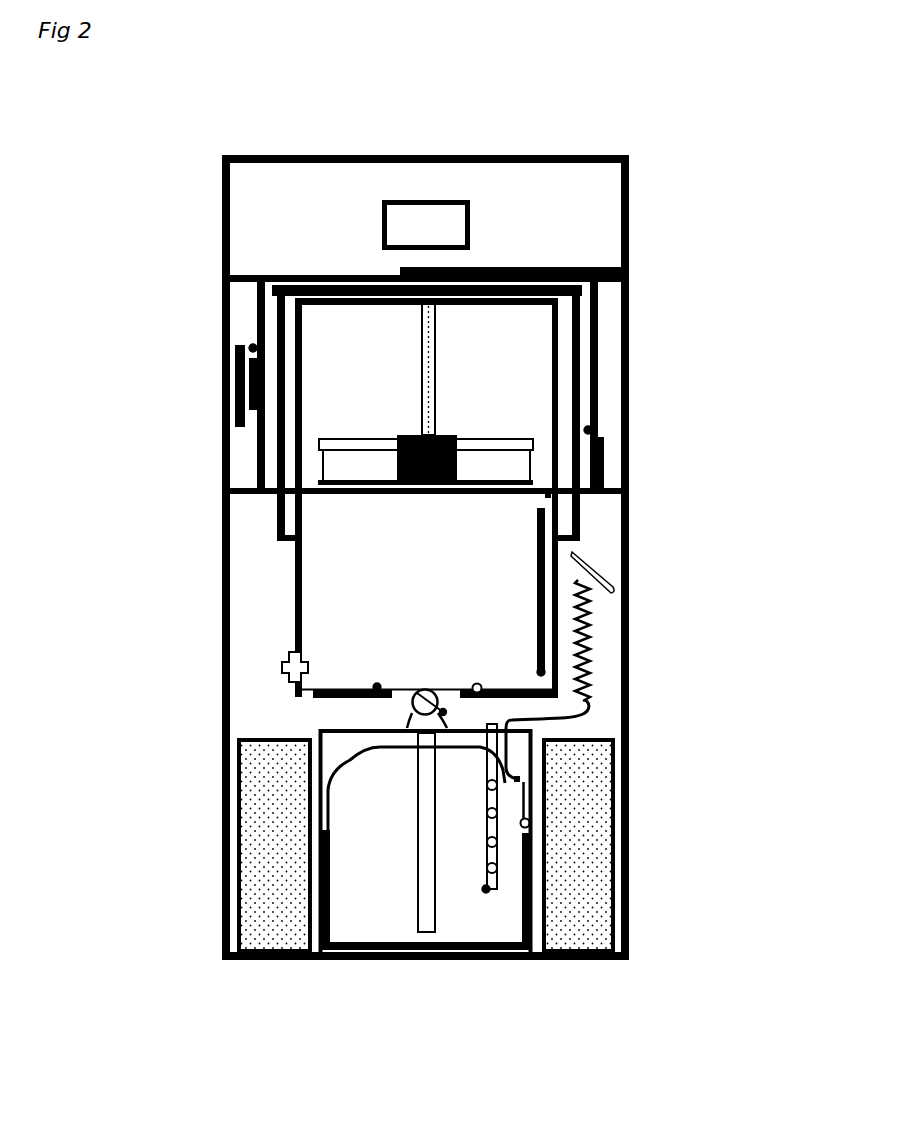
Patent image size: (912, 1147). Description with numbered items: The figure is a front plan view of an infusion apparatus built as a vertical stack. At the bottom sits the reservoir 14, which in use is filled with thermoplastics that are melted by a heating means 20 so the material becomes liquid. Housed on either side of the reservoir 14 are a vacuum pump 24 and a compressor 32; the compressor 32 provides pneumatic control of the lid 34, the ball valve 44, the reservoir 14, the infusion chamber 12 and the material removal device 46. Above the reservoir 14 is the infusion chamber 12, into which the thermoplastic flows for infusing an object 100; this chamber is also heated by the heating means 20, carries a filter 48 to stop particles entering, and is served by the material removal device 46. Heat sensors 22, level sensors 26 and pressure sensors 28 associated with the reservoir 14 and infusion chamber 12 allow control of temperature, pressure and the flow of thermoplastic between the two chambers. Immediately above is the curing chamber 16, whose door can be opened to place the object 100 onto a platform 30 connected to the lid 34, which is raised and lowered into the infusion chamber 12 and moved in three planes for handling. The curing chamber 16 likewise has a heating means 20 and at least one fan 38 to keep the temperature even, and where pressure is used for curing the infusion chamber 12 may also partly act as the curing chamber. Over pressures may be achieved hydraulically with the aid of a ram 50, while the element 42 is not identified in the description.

The infusion chamber 12 is at (296, 642).
The reservoir 14 is at (323, 937).
The curing chamber 16 is at (630, 468).
The heating means 20 is at (236, 397).
The heat sensors 22 is at (252, 347).
The vacuum pump 24 is at (628, 888).
The level sensors 26 is at (545, 527).
The pressure sensors 28 is at (550, 495).
The platform 30 is at (437, 343).
The compressor 32 is at (240, 817).
The lid 34 is at (296, 292).
The fan 38 is at (629, 269).
The control box 42 is at (462, 230).
The ball valve 44 is at (414, 703).
The material removal device 46 is at (613, 585).
The filter 48 is at (444, 690).
The ram 50 is at (283, 667).
The object 100 is at (458, 462).